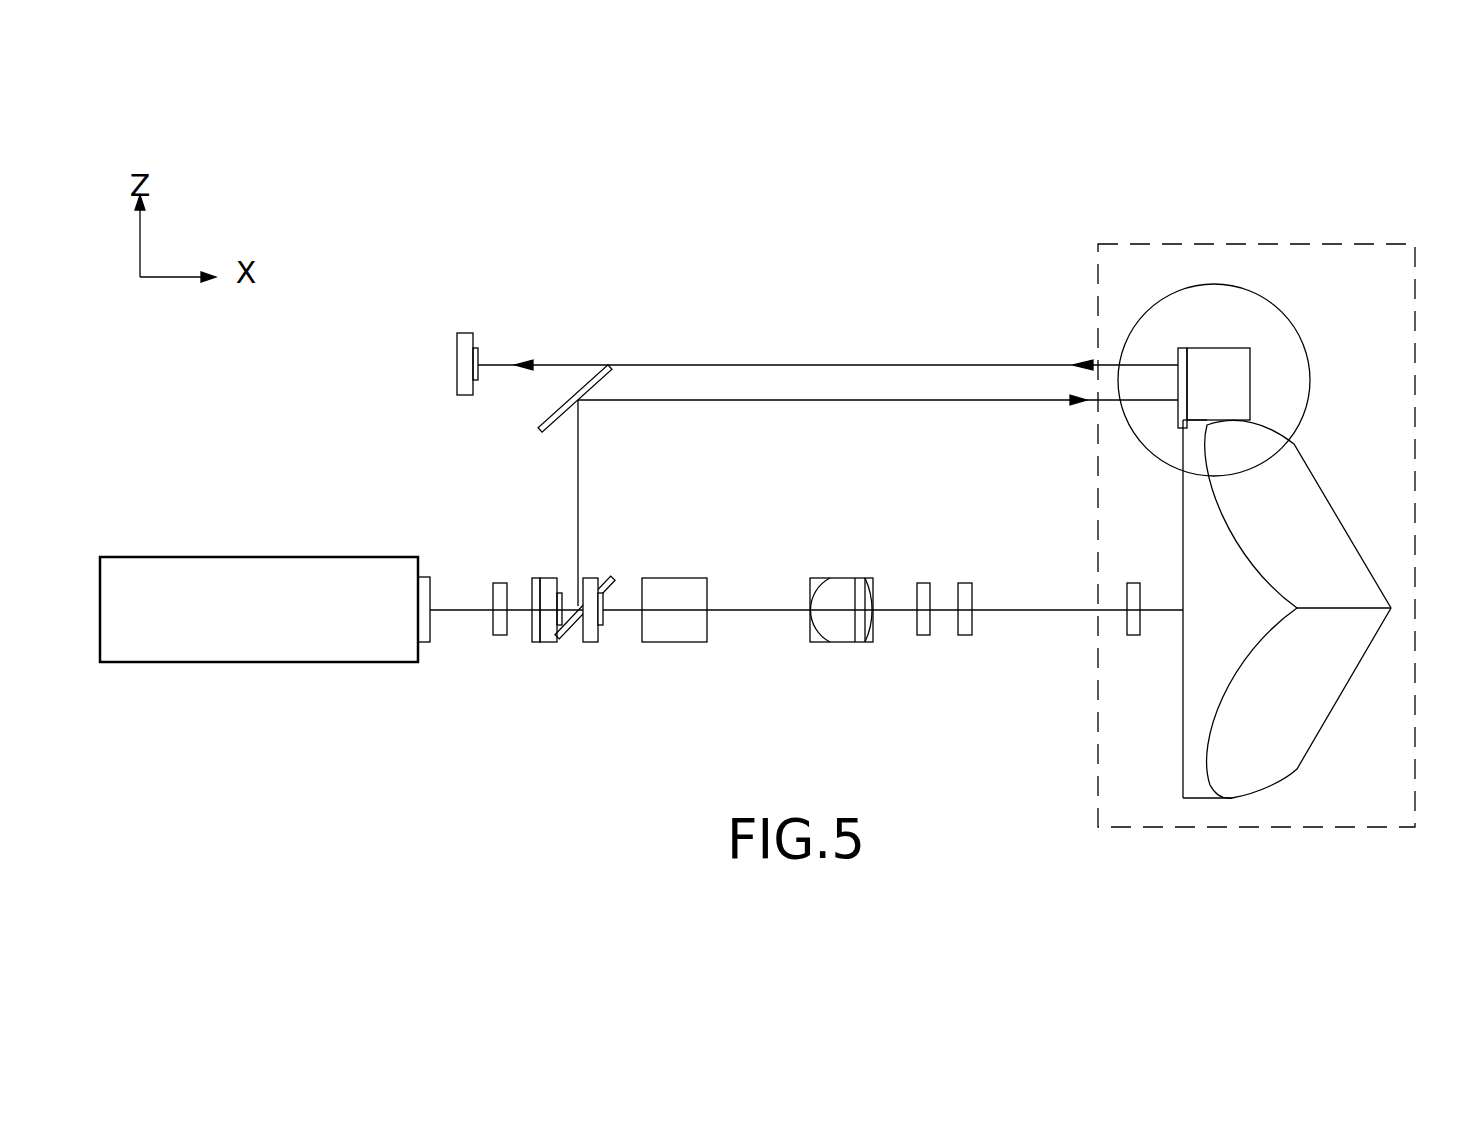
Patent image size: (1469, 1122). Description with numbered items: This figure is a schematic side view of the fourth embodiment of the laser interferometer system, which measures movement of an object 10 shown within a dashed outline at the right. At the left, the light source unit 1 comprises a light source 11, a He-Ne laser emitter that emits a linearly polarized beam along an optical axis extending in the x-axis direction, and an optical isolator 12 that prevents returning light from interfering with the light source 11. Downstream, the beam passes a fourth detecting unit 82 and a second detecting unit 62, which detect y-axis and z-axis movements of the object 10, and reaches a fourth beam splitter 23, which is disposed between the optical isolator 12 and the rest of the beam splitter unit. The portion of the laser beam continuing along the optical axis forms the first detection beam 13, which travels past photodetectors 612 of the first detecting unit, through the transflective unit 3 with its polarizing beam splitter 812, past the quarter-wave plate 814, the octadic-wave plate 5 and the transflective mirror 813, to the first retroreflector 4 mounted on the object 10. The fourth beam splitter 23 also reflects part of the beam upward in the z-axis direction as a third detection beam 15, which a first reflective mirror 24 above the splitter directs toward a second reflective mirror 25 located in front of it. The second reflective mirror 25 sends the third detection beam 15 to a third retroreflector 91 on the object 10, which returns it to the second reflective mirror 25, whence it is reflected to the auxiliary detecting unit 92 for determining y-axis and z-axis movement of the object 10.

The light source unit 1 is at (208, 535).
The light source 11 is at (283, 590).
The optical isolator 12 is at (492, 625).
The fourth detecting unit 82 is at (529, 632).
The second detecting unit 62 is at (548, 642).
The fourth beam splitter 23 is at (567, 632).
The photodetectors 612 is at (593, 642).
The first detection beam 13 is at (753, 612).
The third detection beam 15 is at (578, 515).
The first reflective mirror 24 is at (547, 420).
The auxiliary detecting unit 92 is at (457, 365).
The transflective unit 3 is at (840, 668).
The polarizing beam splitter 812 is at (830, 642).
The quarter-wave plate 814 is at (922, 637).
The octadic-wave plate 5 is at (963, 637).
The transflective mirror 813 is at (1129, 622).
The object 10 is at (1272, 230).
The third retroreflector 91 is at (1300, 312).
The second reflective mirror 25 is at (1243, 383).
The first retroreflector 4 is at (1340, 487).